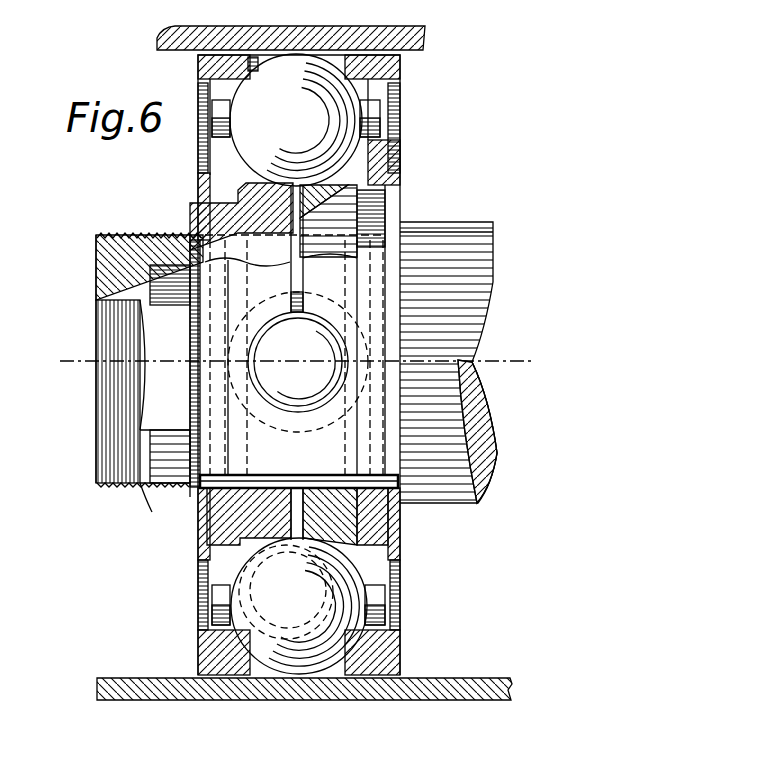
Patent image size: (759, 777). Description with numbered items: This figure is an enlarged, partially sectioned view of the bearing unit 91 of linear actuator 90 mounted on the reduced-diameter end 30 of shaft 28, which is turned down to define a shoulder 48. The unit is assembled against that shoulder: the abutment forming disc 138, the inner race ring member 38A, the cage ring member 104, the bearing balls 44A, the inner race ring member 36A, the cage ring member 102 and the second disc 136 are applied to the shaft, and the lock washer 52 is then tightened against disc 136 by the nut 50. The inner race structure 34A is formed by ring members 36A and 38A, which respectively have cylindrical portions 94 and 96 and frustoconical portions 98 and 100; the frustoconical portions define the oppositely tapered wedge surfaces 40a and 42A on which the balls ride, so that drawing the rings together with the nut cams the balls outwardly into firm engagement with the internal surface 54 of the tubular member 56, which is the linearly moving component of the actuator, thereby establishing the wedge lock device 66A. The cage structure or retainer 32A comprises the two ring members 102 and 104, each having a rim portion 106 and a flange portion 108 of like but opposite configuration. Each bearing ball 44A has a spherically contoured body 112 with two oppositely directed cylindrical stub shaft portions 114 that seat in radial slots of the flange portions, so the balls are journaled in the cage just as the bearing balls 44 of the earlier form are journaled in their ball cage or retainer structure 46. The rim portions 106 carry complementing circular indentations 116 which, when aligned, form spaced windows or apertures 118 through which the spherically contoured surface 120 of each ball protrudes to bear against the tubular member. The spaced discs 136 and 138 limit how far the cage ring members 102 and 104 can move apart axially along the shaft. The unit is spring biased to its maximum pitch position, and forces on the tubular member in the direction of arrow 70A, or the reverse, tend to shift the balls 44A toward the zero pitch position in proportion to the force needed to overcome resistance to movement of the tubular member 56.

The shaft 28 is at (440, 225).
The end of shaft 30 is at (104, 251).
The cage structure or retainer 32A is at (427, 81).
The inner race structure 34A is at (219, 207).
The ring member 36A is at (215, 522).
The ring member 38A is at (507, 548).
The wedge surface 40a is at (210, 558).
The wedge surface 42A is at (512, 577).
The bearing balls 44 is at (285, 680).
The bearing balls 44A is at (336, 379).
The ball cage or retainer structure 46 is at (145, 698).
The shoulder 48 is at (404, 200).
The nut 50 is at (157, 468).
The lock washer 52 is at (200, 368).
The internal surface 54 is at (147, 675).
The tubular member 56 is at (187, 698).
The wedge lock device 66A is at (419, 604).
The arrow 70A is at (3, 703).
The linear actuator 90 is at (111, 724).
The bearing unit 91 is at (67, 545).
The cylindrical portion 94 is at (215, 545).
The cylindrical portion 96 is at (400, 542).
The frustoconical portion 98 is at (205, 514).
The frustoconical portion 100 is at (405, 527).
The ring member 102 is at (212, 300).
The ring member 104 is at (385, 310).
The rim portion 106 is at (262, 263).
The flange portion 108 is at (215, 572).
The spherically contoured body 112 is at (398, 650).
The stub shaft portions 114 is at (220, 124).
The circular indentations 116 is at (245, 26).
The windows or apertures 118 is at (226, 73).
The spherically contoured surface 120 is at (257, 137).
The disc 136 is at (205, 176).
The disc 138 is at (402, 170).